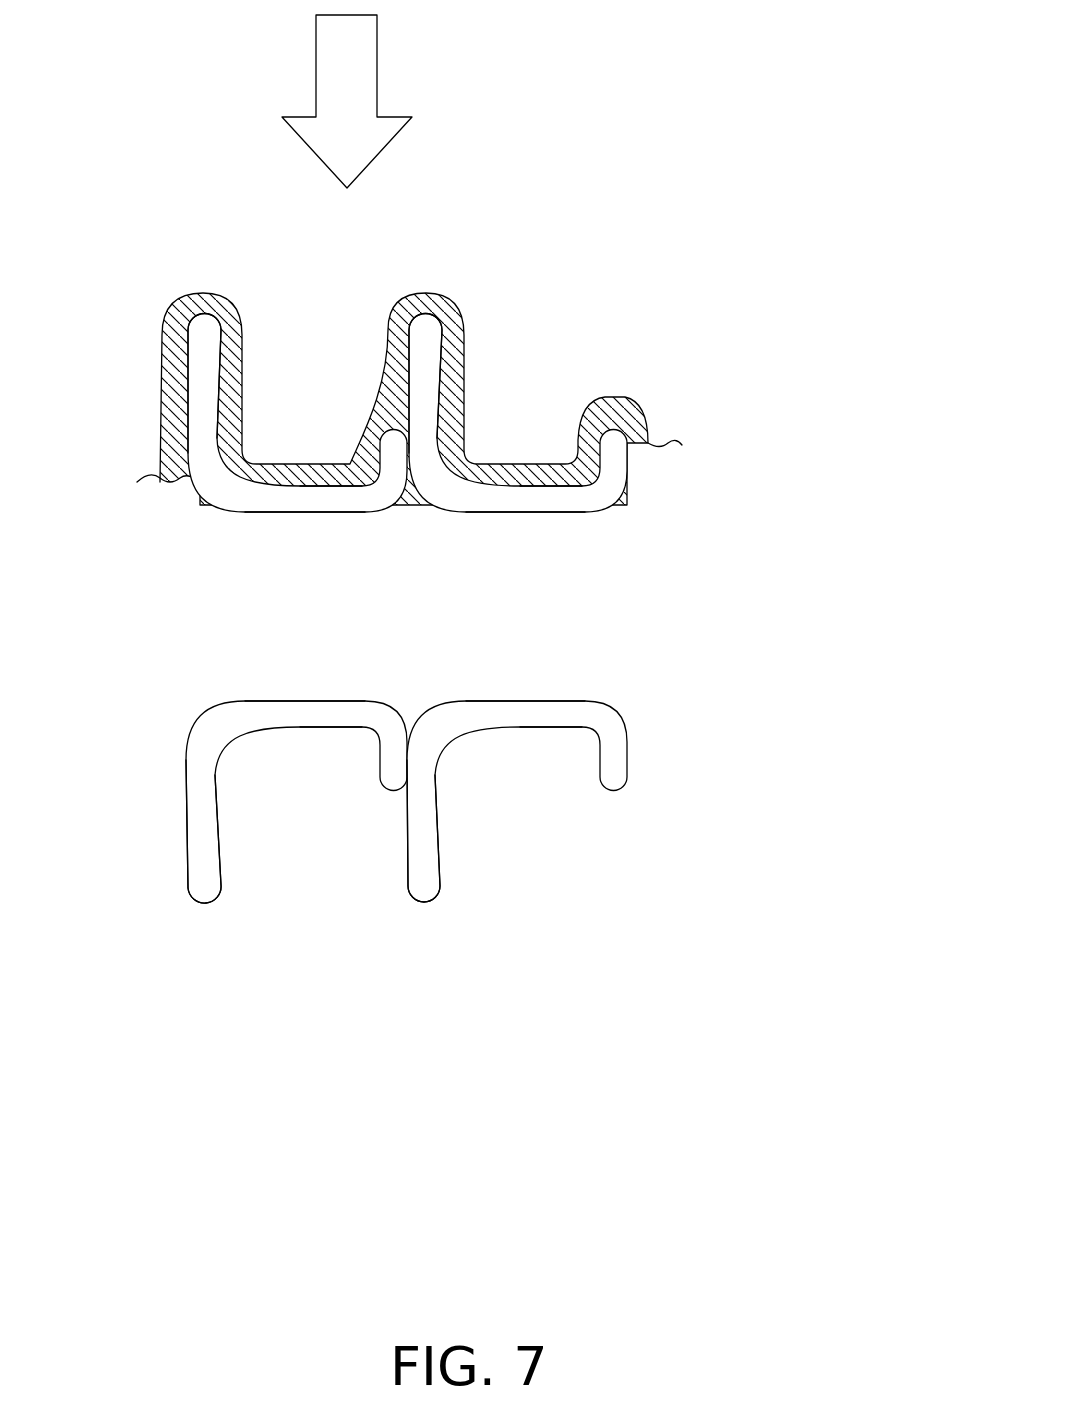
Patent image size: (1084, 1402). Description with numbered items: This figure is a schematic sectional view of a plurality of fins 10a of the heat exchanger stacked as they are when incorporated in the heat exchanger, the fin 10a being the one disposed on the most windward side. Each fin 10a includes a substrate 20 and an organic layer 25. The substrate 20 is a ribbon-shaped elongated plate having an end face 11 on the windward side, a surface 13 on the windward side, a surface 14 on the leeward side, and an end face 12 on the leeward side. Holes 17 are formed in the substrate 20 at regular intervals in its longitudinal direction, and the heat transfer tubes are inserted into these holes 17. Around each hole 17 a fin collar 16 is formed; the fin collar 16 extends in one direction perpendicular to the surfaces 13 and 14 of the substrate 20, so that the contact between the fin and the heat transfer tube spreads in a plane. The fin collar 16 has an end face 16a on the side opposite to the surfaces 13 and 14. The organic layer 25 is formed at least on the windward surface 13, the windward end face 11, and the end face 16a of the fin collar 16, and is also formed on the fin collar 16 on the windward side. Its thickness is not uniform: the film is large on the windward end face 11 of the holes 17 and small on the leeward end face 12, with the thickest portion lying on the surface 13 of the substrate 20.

The fin 10a is at (710, 800).
The end face on the windward side 11 is at (205, 303).
The end face on the leeward side 12 is at (430, 903).
The surface on the windward side 13 is at (220, 357).
The surface on the leeward side 14 is at (403, 808).
The fin collar 16 is at (312, 502).
The end face of the fin collar 16a is at (385, 345).
The hole 17 is at (245, 608).
The substrate 20 is at (632, 1053).
The organic layer 25 is at (225, 404).